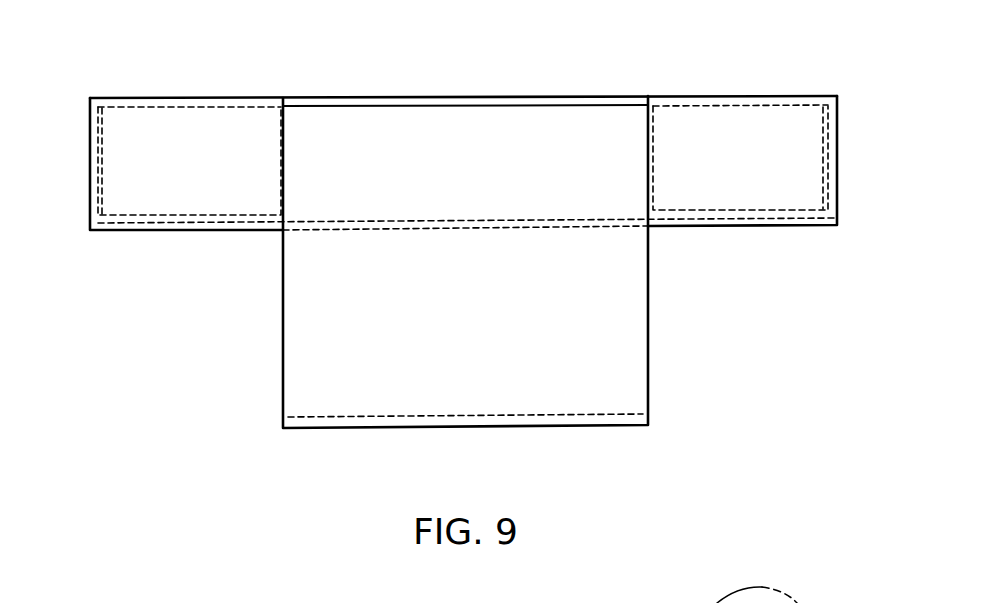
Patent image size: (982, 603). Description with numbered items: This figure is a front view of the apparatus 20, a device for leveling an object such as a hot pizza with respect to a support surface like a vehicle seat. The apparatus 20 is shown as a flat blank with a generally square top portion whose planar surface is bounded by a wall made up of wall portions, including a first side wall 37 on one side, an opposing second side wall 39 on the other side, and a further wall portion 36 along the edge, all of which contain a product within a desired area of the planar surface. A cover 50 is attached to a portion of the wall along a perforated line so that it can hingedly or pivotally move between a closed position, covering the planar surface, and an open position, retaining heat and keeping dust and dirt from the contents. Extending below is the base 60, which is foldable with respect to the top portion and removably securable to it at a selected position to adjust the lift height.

The apparatus 20 is at (396, 70).
The cover 50 is at (622, 99).
The first side wall 37 is at (90, 185).
The second side wall 39 is at (838, 181).
The wall portion 36 is at (722, 203).
The base 60 is at (295, 334).